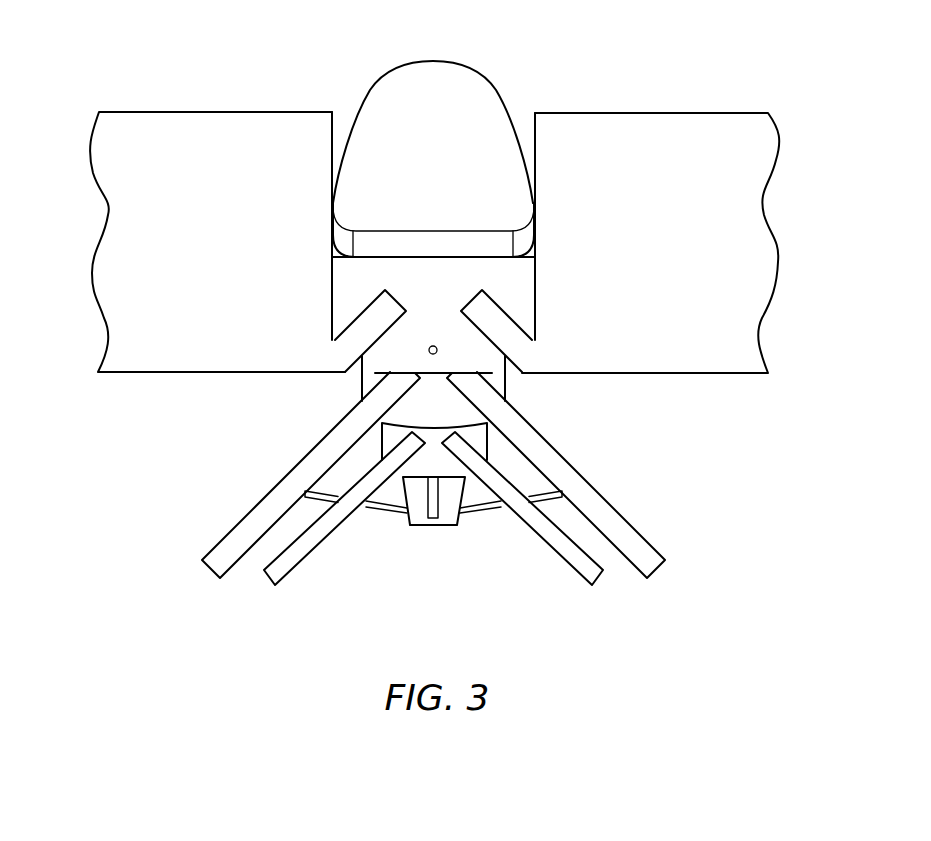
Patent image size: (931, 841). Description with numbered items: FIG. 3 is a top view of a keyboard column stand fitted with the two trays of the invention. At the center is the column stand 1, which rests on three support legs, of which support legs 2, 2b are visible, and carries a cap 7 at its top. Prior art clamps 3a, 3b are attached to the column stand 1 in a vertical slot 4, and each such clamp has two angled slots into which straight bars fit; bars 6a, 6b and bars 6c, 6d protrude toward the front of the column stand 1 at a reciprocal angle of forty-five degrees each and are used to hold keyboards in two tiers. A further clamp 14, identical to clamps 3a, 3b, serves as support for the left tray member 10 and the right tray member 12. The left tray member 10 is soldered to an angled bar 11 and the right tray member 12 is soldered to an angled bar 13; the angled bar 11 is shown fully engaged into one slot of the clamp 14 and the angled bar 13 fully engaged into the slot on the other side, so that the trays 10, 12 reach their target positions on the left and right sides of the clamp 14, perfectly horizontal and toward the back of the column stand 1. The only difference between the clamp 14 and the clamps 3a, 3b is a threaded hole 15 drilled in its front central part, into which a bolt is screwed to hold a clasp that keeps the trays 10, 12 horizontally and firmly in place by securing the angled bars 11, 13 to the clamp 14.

The column stand 1 is at (445, 525).
The support leg 2 is at (383, 510).
The support leg 2b is at (483, 510).
The clamp 3a is at (488, 440).
The clamp 3b is at (507, 383).
The vertical slot 4 is at (433, 518).
The bar 6a is at (273, 575).
The bar 6b is at (595, 575).
The lead pin 6c is at (272, 502).
The lead pin 6d is at (597, 502).
The cap 7 is at (473, 98).
The left tray member 10 is at (92, 180).
The angled bar 11 is at (392, 308).
The right tray member 12 is at (772, 172).
The angled bar 13 is at (478, 310).
The clamp 14 is at (378, 362).
The threaded hole 15 is at (433, 345).